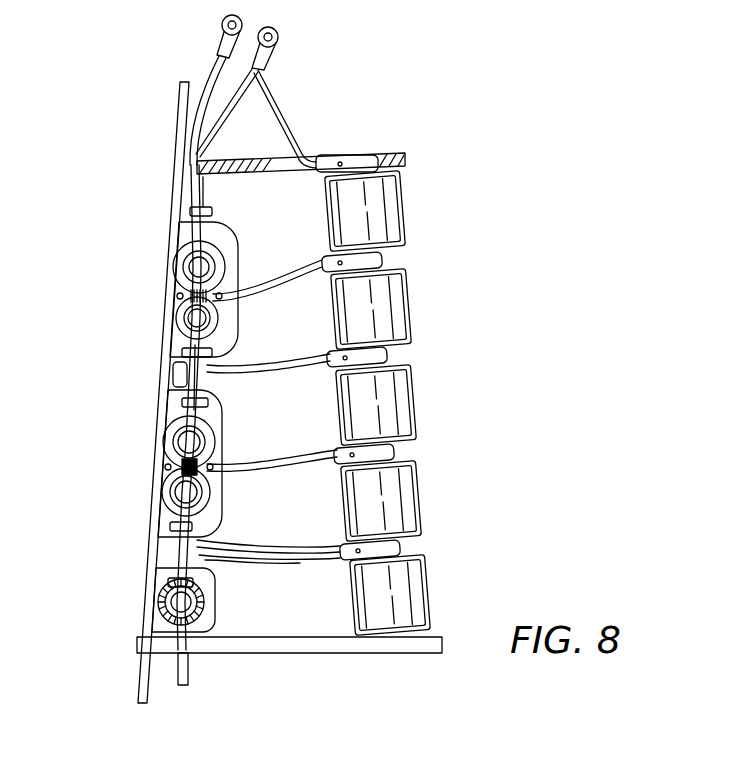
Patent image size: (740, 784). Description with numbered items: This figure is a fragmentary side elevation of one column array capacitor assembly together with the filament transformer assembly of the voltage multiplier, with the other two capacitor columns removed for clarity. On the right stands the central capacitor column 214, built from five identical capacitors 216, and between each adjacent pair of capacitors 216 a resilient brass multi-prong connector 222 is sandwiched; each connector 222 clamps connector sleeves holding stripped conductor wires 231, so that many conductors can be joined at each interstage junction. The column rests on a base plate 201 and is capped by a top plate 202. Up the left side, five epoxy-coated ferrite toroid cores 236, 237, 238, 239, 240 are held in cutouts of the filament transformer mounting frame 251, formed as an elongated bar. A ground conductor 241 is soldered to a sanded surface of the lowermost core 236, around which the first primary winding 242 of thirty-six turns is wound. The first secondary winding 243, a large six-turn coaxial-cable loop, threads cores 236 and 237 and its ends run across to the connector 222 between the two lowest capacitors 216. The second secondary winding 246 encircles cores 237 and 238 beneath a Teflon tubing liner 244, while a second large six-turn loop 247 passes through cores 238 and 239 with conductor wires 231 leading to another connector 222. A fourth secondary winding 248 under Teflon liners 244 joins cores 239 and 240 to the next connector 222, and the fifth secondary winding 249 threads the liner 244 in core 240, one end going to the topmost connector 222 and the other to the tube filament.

The base plate 201 is at (330, 648).
The top plate 202 is at (380, 146).
The central capacitor column 214 is at (392, 674).
The capacitor 216 is at (403, 230).
The connector 222 is at (384, 265).
The conductor wire 231 is at (273, 278).
The lowermost ferrite toroid core 236 is at (160, 617).
The second ferrite toroid core 237 is at (165, 505).
The ferrite toroid core 238 is at (164, 436).
The ferrite toroid core 239 is at (176, 330).
The ferrite toroid core 240 is at (213, 251).
The conductor 241 is at (188, 667).
The first primary winding 242 is at (206, 607).
The first secondary winding 243 is at (200, 518).
The Teflon tubing liner 244 is at (189, 276).
The second secondary winding 246 is at (164, 468).
The second large six turn loop 247 is at (208, 341).
The fourth secondary winding 248 is at (175, 305).
The fifth secondary winding 249 is at (204, 194).
The filament transformer mounting frame 251 is at (172, 225).